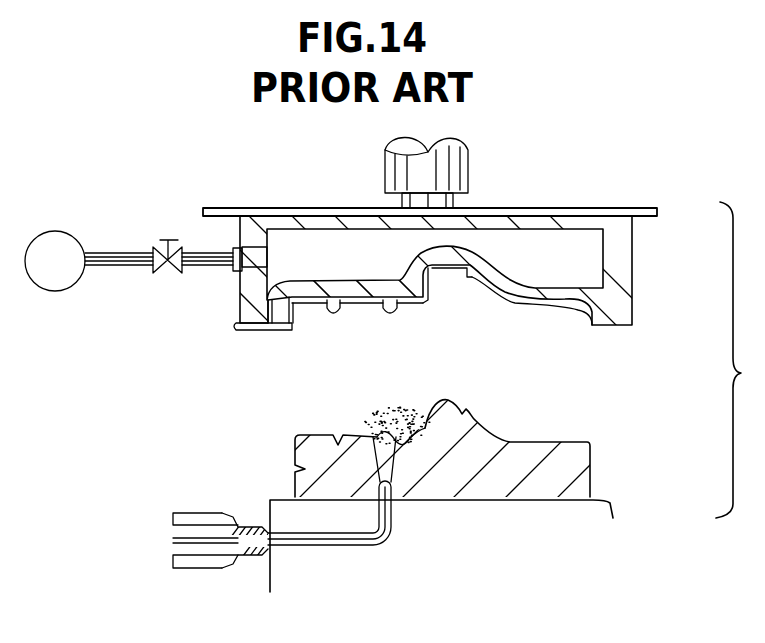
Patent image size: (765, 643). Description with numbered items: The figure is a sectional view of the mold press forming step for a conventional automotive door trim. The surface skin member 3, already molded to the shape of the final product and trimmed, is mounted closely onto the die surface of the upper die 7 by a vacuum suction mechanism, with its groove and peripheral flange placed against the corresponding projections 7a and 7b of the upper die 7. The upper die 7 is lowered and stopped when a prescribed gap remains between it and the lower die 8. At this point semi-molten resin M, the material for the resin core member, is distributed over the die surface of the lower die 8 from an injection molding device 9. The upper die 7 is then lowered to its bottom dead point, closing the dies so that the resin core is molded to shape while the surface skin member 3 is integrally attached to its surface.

The upper die 7 is at (622, 259).
The projection 7a is at (389, 297).
The projection 7b is at (490, 288).
The surface skin member 3 is at (430, 299).
The lower die 8 is at (570, 466).
The semi-molten resin M is at (397, 419).
The injection molding device 9 is at (200, 507).